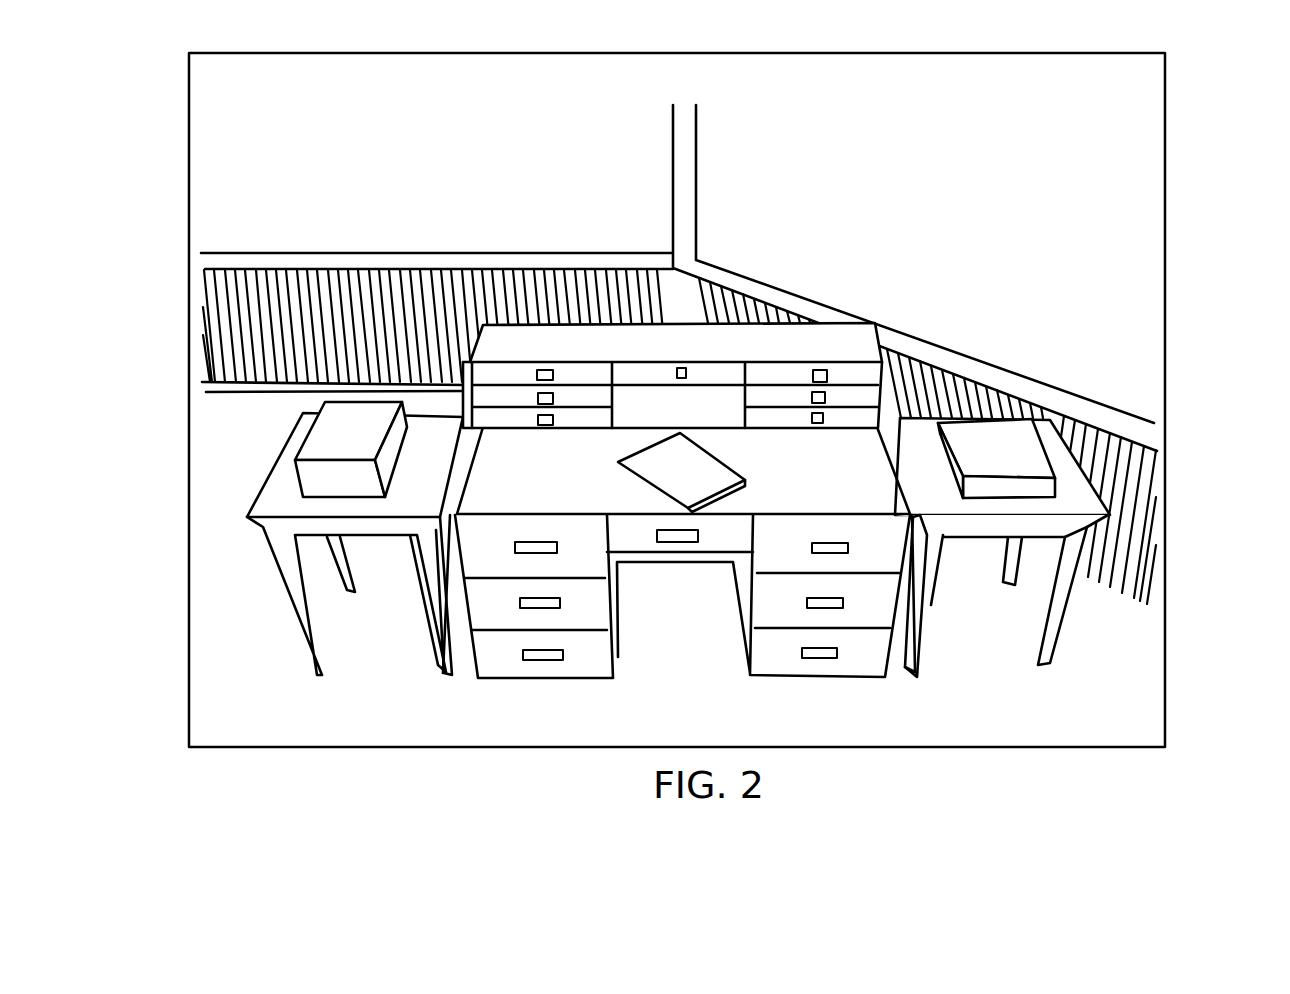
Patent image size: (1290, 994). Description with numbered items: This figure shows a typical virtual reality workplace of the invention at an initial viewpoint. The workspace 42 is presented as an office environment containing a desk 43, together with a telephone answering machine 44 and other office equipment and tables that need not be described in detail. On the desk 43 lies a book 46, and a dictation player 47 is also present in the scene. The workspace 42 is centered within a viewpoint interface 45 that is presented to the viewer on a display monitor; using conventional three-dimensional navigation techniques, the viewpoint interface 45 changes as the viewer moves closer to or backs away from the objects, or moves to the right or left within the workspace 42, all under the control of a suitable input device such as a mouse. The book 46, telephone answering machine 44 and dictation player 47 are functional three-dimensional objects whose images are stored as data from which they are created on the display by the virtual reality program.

The workspace 42 is at (1165, 437).
The desk 43 is at (578, 345).
The telephone answering machine 44 is at (1000, 458).
The viewpoint interface 45 is at (480, 748).
The book 46 is at (665, 460).
The dictation player 47 is at (348, 420).